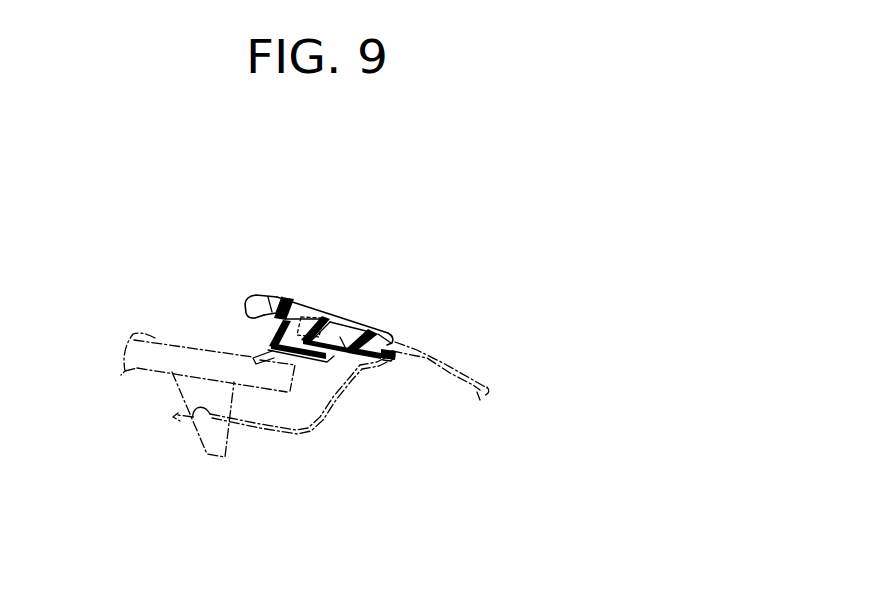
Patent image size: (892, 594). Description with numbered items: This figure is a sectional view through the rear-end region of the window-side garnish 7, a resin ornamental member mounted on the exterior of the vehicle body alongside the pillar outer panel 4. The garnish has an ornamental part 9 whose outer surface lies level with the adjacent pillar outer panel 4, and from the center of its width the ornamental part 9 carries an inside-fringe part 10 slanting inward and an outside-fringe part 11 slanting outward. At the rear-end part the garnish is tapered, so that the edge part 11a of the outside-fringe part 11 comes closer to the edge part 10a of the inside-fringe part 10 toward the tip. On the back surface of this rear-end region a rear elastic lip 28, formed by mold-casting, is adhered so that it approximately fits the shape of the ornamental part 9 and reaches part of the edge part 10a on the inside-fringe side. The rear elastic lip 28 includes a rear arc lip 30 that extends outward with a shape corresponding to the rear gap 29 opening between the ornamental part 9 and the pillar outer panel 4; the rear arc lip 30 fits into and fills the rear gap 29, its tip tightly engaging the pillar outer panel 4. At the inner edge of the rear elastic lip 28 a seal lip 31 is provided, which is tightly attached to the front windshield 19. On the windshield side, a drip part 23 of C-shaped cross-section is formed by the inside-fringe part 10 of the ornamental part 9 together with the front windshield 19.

The window-side garnish 7 is at (288, 273).
The inside-fringe part 10 is at (267, 297).
The edge part of the inside-fringe part 10a is at (247, 304).
The ornamental part 9 is at (324, 314).
The outside-fringe part 11 is at (364, 325).
The edge part of the outside-fringe part 11a is at (390, 334).
The rear gap 29 is at (398, 341).
The rear elastic lip 28 is at (311, 361).
The rear arc lip 30 is at (390, 359).
The seal lip 31 is at (257, 360).
The front windshield 19 is at (153, 338).
The drip part 23 is at (258, 335).
The pillar outer panel 4 is at (444, 363).